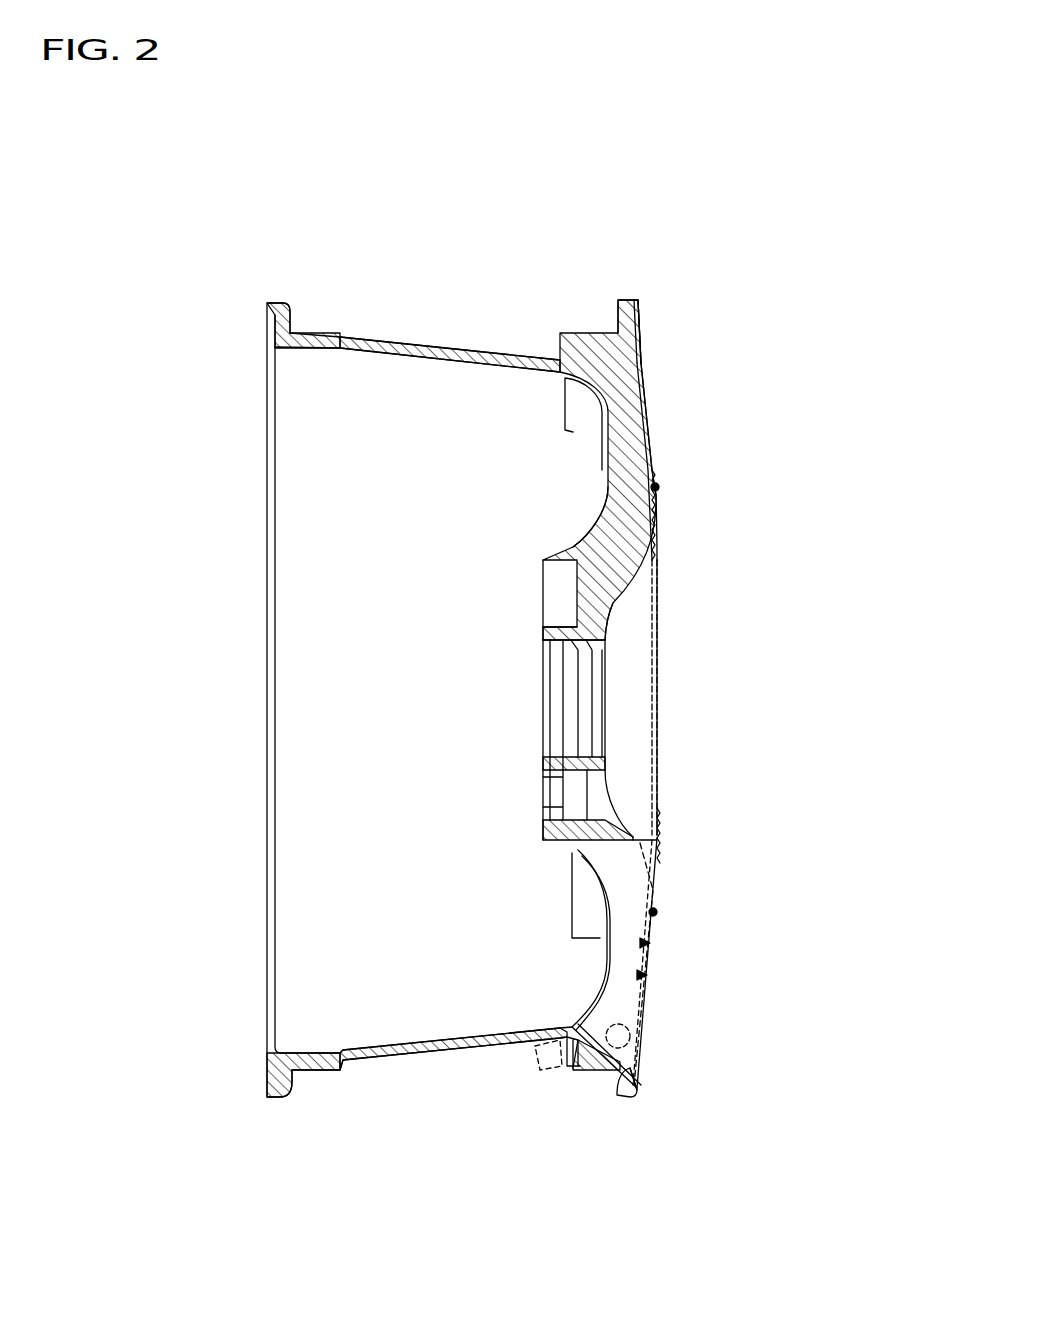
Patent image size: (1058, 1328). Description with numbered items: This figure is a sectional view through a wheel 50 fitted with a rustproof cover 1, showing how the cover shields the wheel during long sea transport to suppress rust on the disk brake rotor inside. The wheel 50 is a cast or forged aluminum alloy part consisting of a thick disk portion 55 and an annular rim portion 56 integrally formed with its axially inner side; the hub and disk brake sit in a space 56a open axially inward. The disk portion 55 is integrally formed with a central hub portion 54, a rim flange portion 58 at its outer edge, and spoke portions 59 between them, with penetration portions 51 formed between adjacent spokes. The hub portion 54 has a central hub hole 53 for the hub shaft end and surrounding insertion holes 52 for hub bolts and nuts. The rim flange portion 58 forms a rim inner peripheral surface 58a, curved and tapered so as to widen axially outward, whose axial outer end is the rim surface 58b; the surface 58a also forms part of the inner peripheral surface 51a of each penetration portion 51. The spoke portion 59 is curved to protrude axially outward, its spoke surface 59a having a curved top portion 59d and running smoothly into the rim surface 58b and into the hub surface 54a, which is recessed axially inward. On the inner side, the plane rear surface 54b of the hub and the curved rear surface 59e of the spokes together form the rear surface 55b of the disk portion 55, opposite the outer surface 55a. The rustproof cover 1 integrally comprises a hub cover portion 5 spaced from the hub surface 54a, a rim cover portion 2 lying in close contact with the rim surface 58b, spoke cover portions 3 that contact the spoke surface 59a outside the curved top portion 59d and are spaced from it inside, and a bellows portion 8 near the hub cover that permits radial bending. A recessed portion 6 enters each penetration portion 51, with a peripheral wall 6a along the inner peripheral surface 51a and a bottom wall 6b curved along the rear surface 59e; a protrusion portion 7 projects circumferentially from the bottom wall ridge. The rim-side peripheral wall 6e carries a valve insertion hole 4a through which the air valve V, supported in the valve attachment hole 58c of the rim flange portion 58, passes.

The rustproof cover 1 is at (770, 568).
The rim cover portion 2 is at (695, 734).
The spoke cover portion 3 is at (715, 461).
The valve insertion hole 4a is at (628, 1035).
The hub cover portion 5 is at (660, 710).
The recessed portion 6 is at (689, 963).
The peripheral wall 6a is at (652, 943).
The bottom wall 6b is at (600, 910).
The rim-side peripheral wall 6e is at (637, 1068).
The protrusion portion 7 is at (603, 438).
The bellows portion 8 is at (660, 545).
The wheel 50 is at (385, 286).
The penetration portion 51 is at (748, 962).
The inner peripheral surface 51a is at (649, 975).
The insertion hole 52 is at (578, 797).
The hub hole 53 is at (555, 703).
The hub portion 54 is at (716, 637).
The hub surface 54a is at (640, 623).
The rear surface of the hub portion 54b is at (548, 632).
The disk portion 55 is at (680, 470).
The surface of the disk portion 55a is at (622, 603).
The rear surface of the disk portion 55b is at (580, 545).
The rim portion 56 is at (462, 350).
The space 56a is at (495, 385).
The rim flange portion 58 is at (628, 308).
The rim inner peripheral surface 58a is at (640, 362).
The rim surface 58b is at (645, 318).
The valve attachment hole 58c is at (565, 1060).
The spoke portion 59 is at (633, 452).
The spoke surface 59a is at (655, 430).
The curved top portion 59d is at (655, 487).
The rear surface of the spoke portion 59e is at (530, 528).
The air valve V is at (630, 1040).